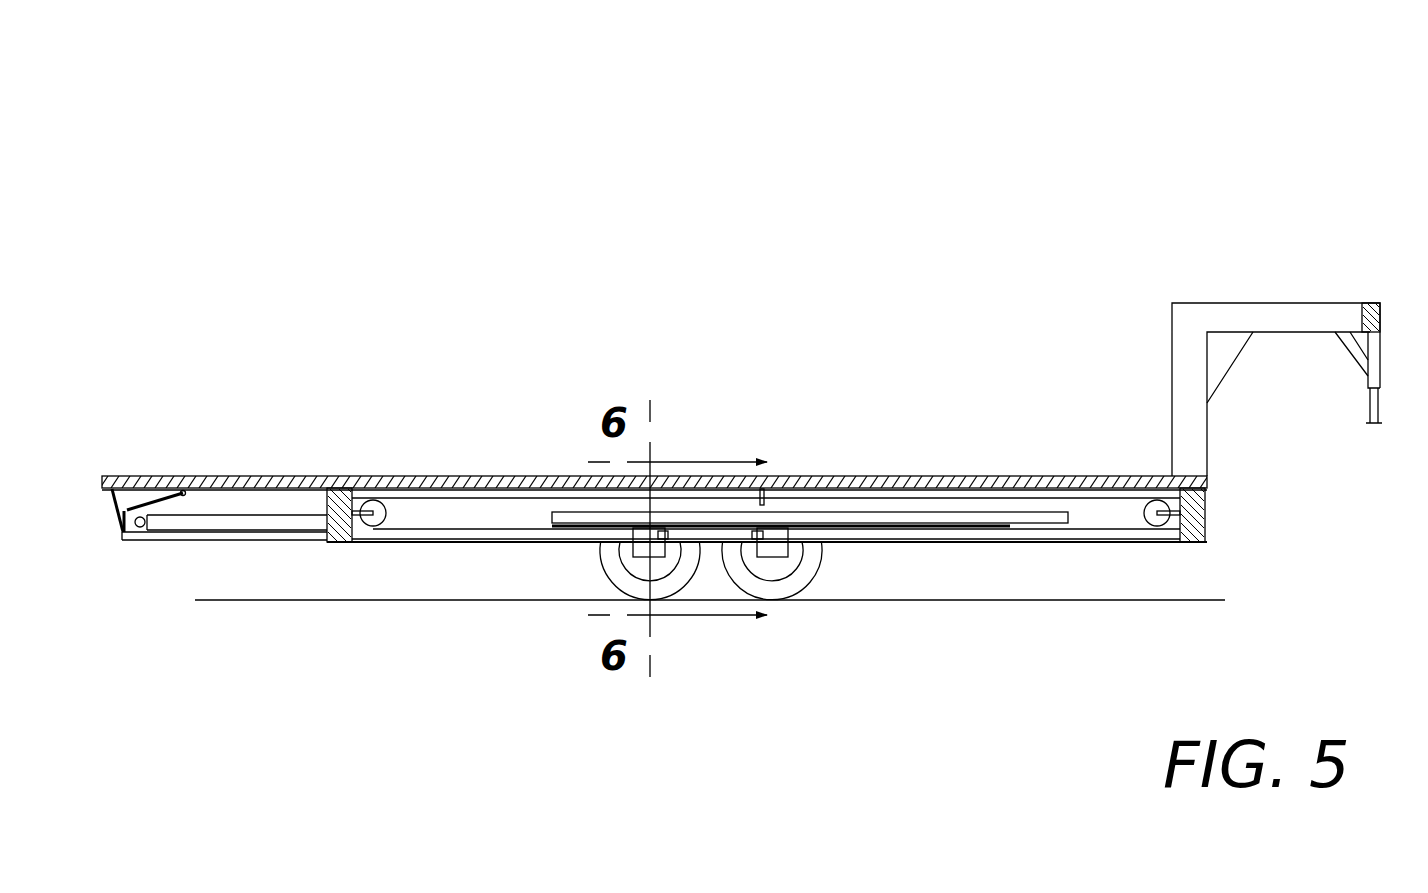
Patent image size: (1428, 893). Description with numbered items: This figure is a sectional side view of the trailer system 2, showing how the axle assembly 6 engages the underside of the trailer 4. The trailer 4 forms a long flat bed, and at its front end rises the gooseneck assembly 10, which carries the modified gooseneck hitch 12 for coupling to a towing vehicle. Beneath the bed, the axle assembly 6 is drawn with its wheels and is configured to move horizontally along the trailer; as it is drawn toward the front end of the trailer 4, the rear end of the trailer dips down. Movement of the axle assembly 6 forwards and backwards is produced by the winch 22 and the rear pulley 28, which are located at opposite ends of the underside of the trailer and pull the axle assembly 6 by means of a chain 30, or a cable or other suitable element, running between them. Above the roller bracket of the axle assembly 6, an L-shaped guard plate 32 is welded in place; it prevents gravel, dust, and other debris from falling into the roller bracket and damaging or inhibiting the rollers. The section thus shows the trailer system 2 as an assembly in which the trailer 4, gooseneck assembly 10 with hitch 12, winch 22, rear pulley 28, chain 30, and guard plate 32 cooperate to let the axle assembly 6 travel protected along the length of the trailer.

The trailer system 2 is at (756, 321).
The trailer 4 is at (657, 507).
The axle assembly 6 is at (790, 555).
The gooseneck assembly 10 is at (1291, 379).
The modified gooseneck hitch 12 is at (1378, 430).
The winch 22 is at (1160, 527).
The rear pulley 28 is at (368, 527).
The chain 30 is at (1130, 527).
The L-shaped guard plate 32 is at (962, 513).